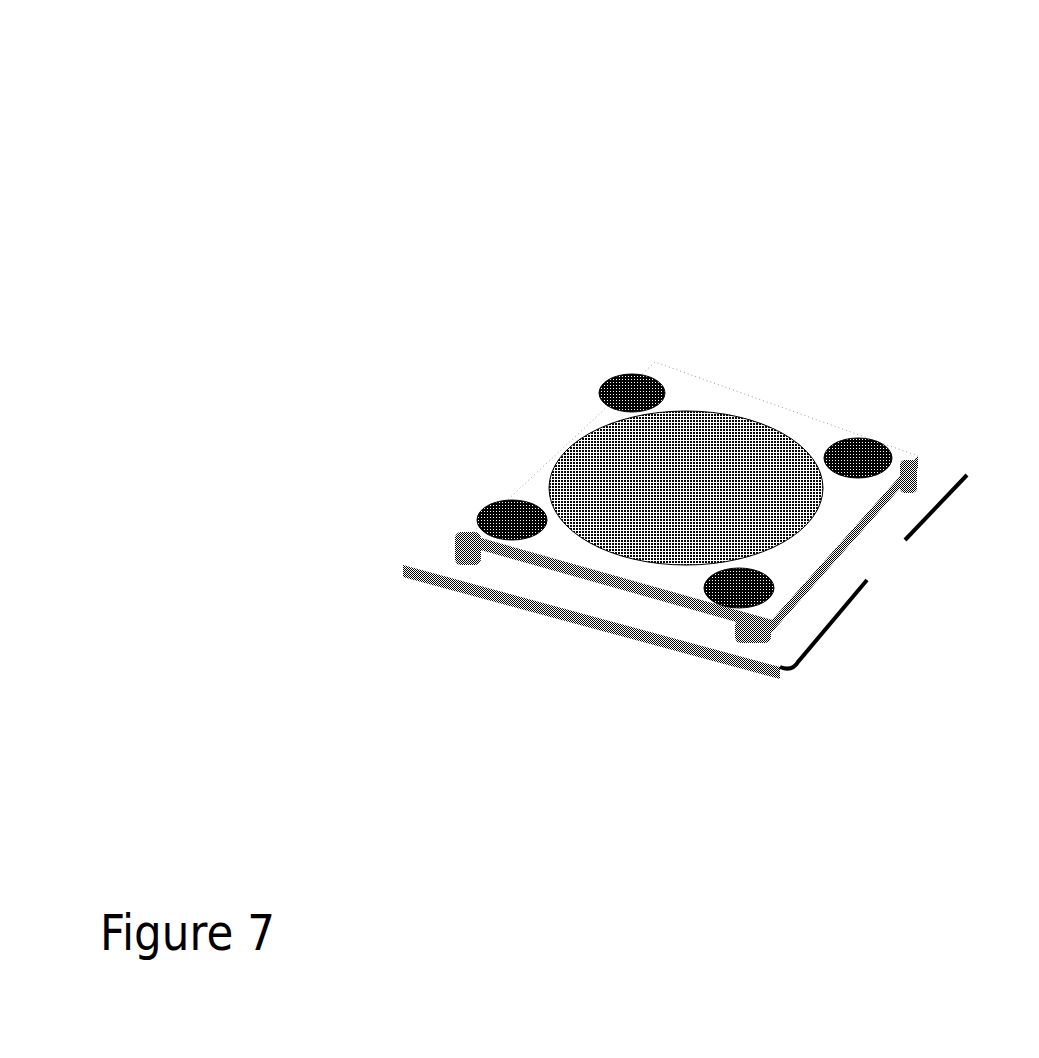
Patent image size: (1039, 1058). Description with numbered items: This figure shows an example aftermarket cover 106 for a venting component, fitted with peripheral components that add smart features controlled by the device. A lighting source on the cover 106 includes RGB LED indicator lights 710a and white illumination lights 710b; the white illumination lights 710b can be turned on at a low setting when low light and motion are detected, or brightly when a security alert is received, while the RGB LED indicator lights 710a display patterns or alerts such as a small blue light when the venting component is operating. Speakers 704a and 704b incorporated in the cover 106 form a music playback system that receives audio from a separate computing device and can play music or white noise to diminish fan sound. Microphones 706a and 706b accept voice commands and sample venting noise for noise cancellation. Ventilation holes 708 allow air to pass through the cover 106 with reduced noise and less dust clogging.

The cover 106 is at (160, 112).
The speaker 704a is at (763, 595).
The speaker 704b is at (627, 389).
The microphone 706a is at (862, 457).
The microphone 706b is at (508, 517).
The ventilation holes 708 is at (577, 588).
The RGB LED indicator lights 710a is at (769, 537).
The white illumination lights 710b is at (706, 472).